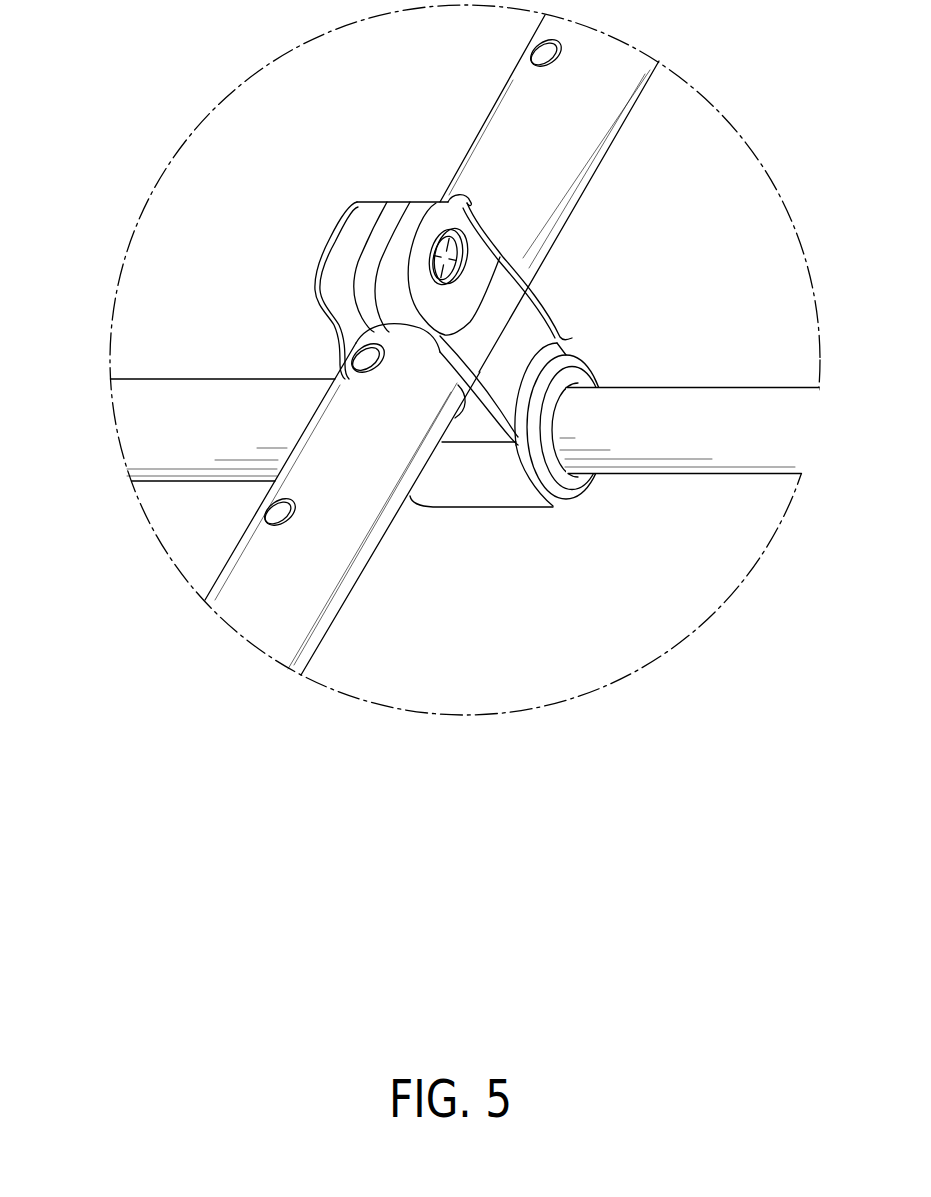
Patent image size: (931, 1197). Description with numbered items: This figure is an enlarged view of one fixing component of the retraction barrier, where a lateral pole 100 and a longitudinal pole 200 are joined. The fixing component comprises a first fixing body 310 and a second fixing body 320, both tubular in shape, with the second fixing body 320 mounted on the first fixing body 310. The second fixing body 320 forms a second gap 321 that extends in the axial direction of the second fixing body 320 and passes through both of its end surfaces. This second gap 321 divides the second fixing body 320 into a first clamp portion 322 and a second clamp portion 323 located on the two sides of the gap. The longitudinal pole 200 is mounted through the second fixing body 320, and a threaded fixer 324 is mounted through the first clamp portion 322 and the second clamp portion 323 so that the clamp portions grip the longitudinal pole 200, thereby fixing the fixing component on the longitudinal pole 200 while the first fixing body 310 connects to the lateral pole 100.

The lateral pole 100 is at (652, 462).
The longitudinal pole 200 is at (573, 173).
The first fixing body 310 is at (492, 495).
The second fixing body 320 is at (313, 236).
The second gap 321 is at (363, 283).
The first clamp portion 322 is at (352, 237).
The second clamp portion 323 is at (410, 232).
The threaded fixer 324 is at (453, 202).